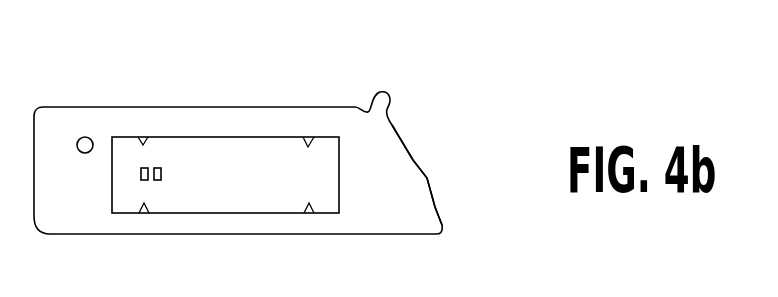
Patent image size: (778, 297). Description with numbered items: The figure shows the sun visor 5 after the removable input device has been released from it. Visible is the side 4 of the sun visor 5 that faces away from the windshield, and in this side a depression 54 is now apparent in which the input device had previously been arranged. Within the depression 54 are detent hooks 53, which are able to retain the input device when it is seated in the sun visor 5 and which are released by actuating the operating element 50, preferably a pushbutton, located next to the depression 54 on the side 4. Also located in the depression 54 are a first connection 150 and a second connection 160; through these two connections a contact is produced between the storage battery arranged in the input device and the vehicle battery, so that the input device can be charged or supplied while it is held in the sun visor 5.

The side of sun visor 4 is at (372, 260).
The sun visor 5 is at (495, 165).
The operating element 50 is at (88, 137).
The detent hooks 53 is at (150, 146).
The depression 54 is at (273, 153).
The first connection 150 is at (120, 260).
The second connection 160 is at (182, 260).